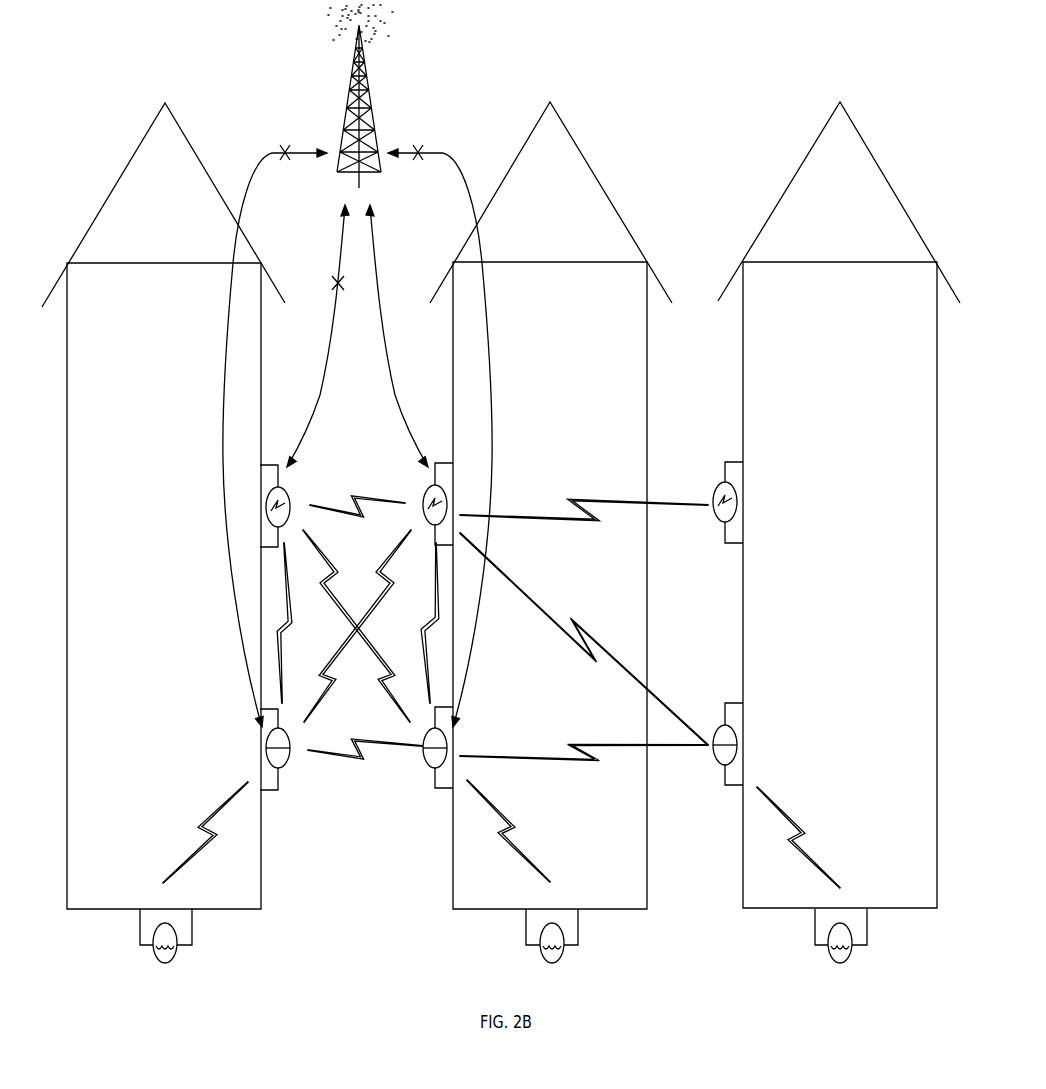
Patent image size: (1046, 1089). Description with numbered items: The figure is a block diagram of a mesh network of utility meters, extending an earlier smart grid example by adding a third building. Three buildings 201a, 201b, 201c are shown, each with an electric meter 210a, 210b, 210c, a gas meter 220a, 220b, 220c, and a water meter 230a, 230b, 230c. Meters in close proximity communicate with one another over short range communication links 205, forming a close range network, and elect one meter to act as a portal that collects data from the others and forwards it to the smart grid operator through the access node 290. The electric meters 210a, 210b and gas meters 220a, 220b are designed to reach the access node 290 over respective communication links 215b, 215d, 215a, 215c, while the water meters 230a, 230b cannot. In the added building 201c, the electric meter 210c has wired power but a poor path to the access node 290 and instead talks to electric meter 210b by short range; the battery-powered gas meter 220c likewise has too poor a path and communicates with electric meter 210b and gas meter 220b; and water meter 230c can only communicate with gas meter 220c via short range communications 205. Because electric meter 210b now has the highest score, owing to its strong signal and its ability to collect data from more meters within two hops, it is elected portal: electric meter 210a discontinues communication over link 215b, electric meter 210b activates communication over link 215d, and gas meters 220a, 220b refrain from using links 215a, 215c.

The building 201a is at (123, 172).
The building 201b is at (595, 172).
The building 201c is at (803, 162).
The communication link 205 is at (592, 502).
The electric meter 210a is at (263, 502).
The electric meter 210b is at (453, 505).
The electric meter 210c is at (743, 500).
The communication link 215a is at (225, 393).
The communication link 215b is at (325, 377).
The communication link 215c is at (492, 397).
The communication link 215d is at (392, 383).
The gas meter 220a is at (263, 748).
The gas meter 220b is at (453, 748).
The gas meter 220c is at (743, 745).
The water meter 230a is at (140, 928).
The water meter 230b is at (578, 928).
The water meter 230c is at (868, 928).
The access node 290 is at (383, 90).